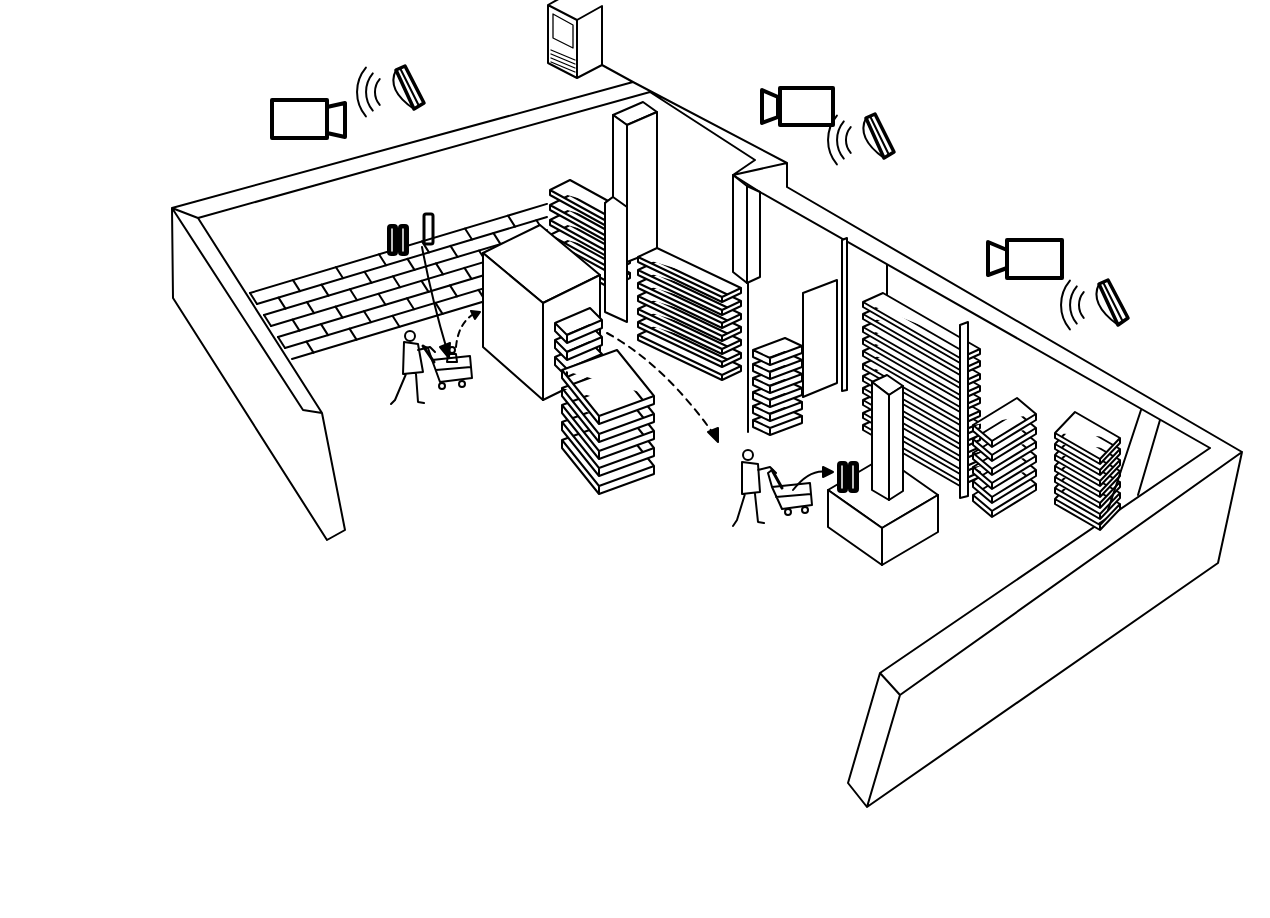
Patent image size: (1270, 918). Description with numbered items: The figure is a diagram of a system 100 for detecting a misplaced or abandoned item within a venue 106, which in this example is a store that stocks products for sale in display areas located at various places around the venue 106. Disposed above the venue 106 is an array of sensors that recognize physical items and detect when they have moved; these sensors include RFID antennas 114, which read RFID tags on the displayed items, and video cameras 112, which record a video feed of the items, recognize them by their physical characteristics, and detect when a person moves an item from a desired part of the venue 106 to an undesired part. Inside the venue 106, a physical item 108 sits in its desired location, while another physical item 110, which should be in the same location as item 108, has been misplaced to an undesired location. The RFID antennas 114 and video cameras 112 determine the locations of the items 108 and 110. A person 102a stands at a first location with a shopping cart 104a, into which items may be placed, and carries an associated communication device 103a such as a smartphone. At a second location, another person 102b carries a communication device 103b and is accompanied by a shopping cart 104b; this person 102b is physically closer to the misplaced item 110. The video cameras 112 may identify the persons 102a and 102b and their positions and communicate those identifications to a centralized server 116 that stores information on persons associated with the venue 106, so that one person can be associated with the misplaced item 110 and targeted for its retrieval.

The system 100 is at (197, 88).
The person 102a is at (398, 367).
The person 102b is at (740, 484).
The communication device 103a is at (426, 372).
The communication device 103b is at (777, 498).
The shopping cart 104a is at (470, 400).
The shopping cart 104b is at (806, 512).
The venue 106 is at (546, 500).
The physical item 108 is at (423, 218).
The physical item 110 is at (838, 462).
The video cameras 112 is at (270, 119).
The RFID antennas 114 is at (418, 88).
The centralized server 116 is at (553, 33).